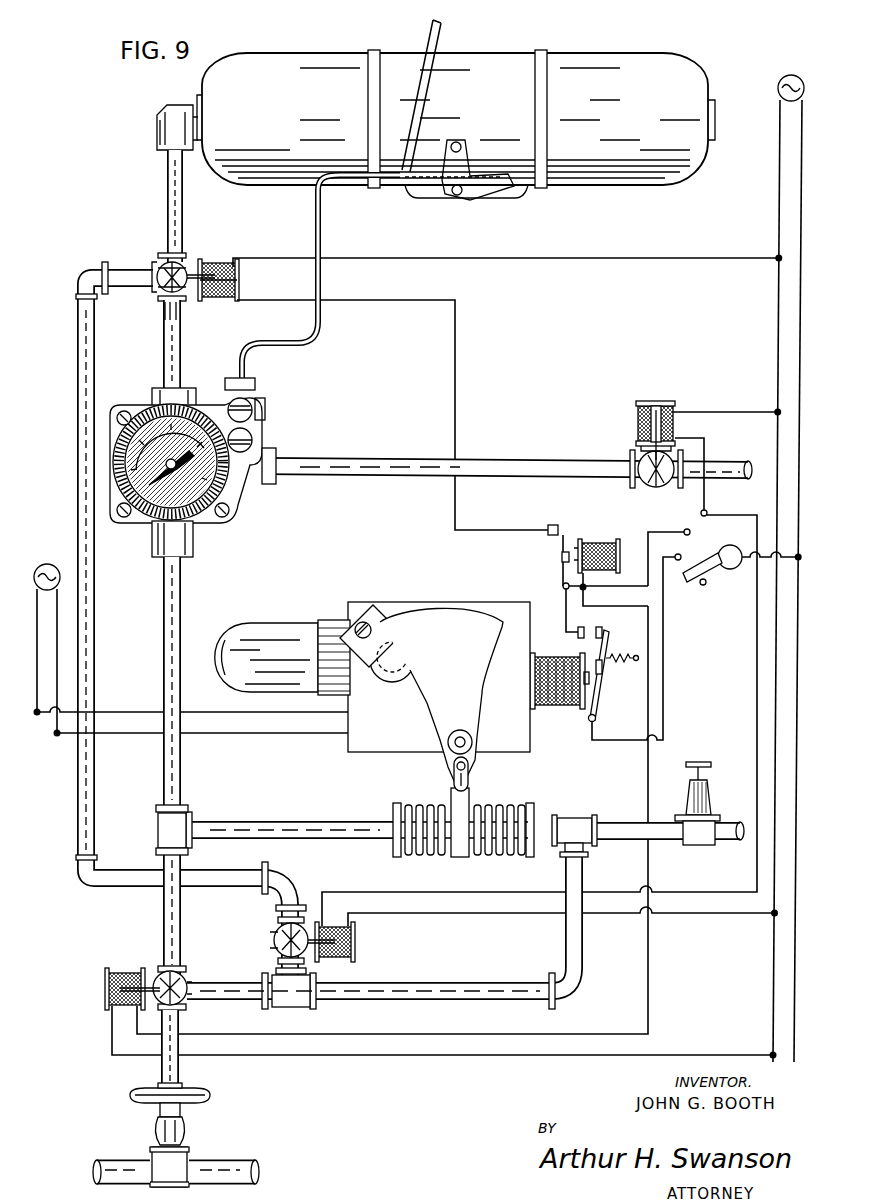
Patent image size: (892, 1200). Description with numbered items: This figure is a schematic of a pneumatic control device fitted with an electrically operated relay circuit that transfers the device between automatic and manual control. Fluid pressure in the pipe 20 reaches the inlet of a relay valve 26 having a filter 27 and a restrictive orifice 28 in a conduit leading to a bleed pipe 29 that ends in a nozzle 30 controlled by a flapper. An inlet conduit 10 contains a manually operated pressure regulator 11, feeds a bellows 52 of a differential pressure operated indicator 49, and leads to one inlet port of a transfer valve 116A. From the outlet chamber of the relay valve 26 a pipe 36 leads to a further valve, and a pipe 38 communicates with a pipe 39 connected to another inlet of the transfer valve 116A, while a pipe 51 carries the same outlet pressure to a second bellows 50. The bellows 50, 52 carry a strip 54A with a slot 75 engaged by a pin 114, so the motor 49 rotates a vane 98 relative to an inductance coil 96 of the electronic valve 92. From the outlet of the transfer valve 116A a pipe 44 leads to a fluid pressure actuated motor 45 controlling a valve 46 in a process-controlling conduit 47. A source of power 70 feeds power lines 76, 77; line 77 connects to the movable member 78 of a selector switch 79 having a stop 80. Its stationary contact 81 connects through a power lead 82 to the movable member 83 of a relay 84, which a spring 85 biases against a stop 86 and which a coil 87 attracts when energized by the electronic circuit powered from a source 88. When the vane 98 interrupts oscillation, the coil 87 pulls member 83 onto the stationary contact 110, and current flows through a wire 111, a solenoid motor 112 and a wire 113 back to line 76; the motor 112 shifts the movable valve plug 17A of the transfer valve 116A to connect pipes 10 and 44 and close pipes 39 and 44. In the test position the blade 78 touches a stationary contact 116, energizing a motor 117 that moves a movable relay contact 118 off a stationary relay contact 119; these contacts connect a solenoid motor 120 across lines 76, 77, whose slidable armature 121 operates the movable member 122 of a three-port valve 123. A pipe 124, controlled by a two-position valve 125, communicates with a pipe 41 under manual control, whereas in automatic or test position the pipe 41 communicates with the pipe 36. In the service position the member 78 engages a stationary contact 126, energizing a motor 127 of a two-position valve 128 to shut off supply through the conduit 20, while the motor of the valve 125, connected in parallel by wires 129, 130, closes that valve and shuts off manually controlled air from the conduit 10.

The inlet conduit 10 is at (722, 822).
The pressure regulator 11 is at (690, 795).
The movable valve plug 17A is at (186, 1008).
The pipe 20 is at (364, 464).
The relay valve 26 is at (234, 528).
The filter 27 is at (252, 440).
The restrictive orifice 28 is at (250, 398).
The bleed pipe 29 is at (320, 324).
The nozzle 30 is at (452, 172).
The pipe 36 is at (165, 344).
The pipe 38 is at (166, 635).
The pipe 39 is at (162, 913).
The pipe 41 is at (167, 193).
The pipe 44 is at (166, 1067).
The fluid pressure actuated motor 45 is at (130, 1096).
The valve 46 is at (165, 1165).
The process-controlling conduit 47 is at (225, 1168).
The differential pressure operated indicator 49 is at (389, 857).
The second bellows 50 is at (422, 806).
The pipe 51 is at (268, 822).
The bellows 52 is at (525, 806).
The strip 54A is at (470, 797).
The source of power 70 is at (789, 75).
The slot 75 is at (468, 772).
The power line 76 is at (778, 148).
The power line 77 is at (801, 193).
The movable switch member 78 is at (710, 575).
The selector switch 79 is at (719, 612).
The stop 80 is at (703, 587).
The stationary contact 81 is at (677, 554).
The power lead 82 is at (664, 700).
The movable relay member 83 is at (599, 690).
The relay 84 is at (567, 709).
The spring 85 is at (607, 660).
The stop 86 is at (602, 634).
The coil 87 is at (565, 662).
The source of electric power 88 is at (47, 564).
The electronic valve 92 is at (404, 574).
The inductance coil 96 is at (393, 636).
The vane 98 is at (460, 627).
The stationary contact 110 is at (578, 628).
The lead wire 111 is at (590, 597).
The electric motor 112 is at (122, 972).
The lead wire 113 is at (112, 1034).
The pin 114 is at (455, 778).
The stationary switch contact 116 is at (686, 529).
The transfer valve 116A is at (212, 963).
The motor 117 is at (597, 543).
The movable relay contact 118 is at (560, 555).
The stationary relay contact 119 is at (550, 525).
The solenoid motor 120 is at (228, 264).
The slidable armature 121 is at (238, 277).
The movable valve member 122 is at (158, 268).
The three-port valve 123 is at (205, 252).
The pipe 124 is at (78, 359).
The two-position valve 125 is at (305, 958).
The stationary contact 126 is at (706, 511).
The motor 127 is at (636, 413).
The two-position valve 128 is at (636, 458).
The wire 129 is at (757, 524).
The wire 130 is at (745, 919).